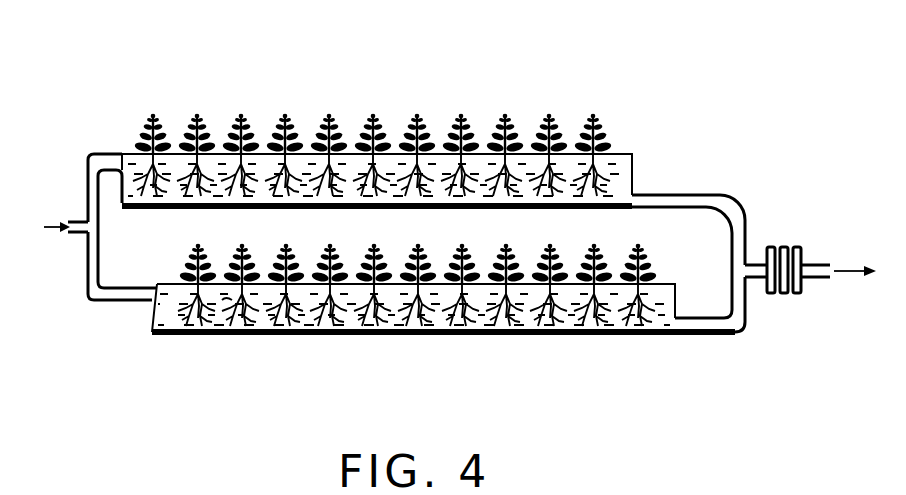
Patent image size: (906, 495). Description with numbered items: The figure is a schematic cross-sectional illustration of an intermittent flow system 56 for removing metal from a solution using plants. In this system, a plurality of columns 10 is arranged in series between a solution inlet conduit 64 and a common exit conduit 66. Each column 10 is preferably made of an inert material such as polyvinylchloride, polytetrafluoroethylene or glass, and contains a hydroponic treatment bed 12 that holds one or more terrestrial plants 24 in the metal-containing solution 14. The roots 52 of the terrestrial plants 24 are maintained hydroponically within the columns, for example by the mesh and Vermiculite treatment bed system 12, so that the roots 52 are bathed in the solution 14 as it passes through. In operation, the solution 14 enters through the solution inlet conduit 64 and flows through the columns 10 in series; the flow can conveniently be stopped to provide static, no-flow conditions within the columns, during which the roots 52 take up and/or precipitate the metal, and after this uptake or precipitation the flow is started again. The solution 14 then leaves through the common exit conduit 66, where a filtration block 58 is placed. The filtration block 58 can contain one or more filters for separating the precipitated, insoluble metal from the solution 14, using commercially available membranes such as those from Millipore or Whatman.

The column 10 is at (150, 212).
The hydroponic treatment bed 12 is at (150, 307).
The solution 14 is at (638, 165).
The terrestrial plant 24 is at (292, 115).
The roots 52 is at (228, 305).
The intermittent flow system 56 is at (521, 71).
The filtration block 58 is at (783, 295).
The solution inlet conduit 64 is at (102, 156).
The common exit conduit 66 is at (750, 262).